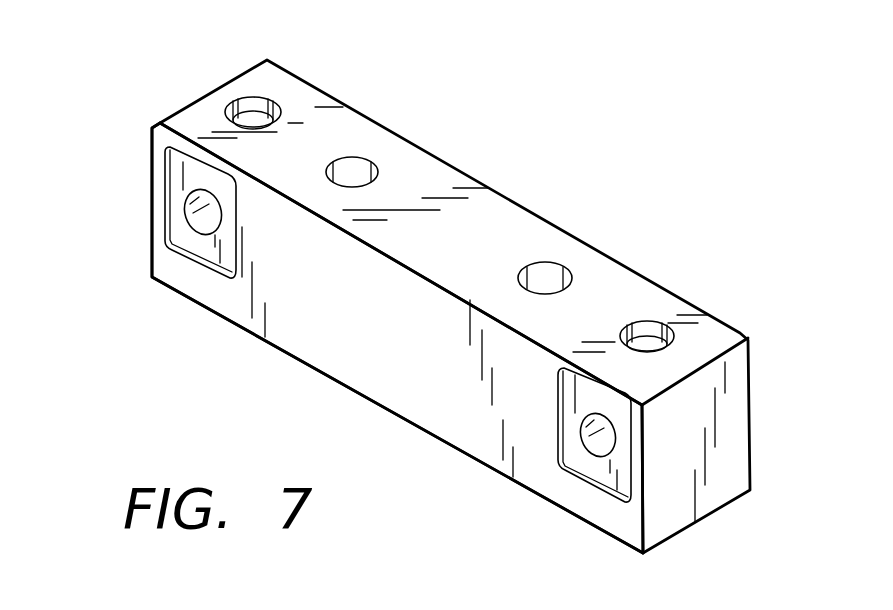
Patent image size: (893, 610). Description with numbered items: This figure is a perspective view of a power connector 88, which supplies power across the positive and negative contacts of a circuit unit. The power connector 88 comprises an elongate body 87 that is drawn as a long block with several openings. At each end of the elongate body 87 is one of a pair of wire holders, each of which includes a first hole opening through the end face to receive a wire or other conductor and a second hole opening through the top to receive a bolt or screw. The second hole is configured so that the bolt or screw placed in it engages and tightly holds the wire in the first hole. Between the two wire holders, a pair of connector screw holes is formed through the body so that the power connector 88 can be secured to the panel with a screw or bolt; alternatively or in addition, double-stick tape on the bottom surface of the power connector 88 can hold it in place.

The elongate body 87 is at (347, 347).
The power connector 88 is at (170, 91).